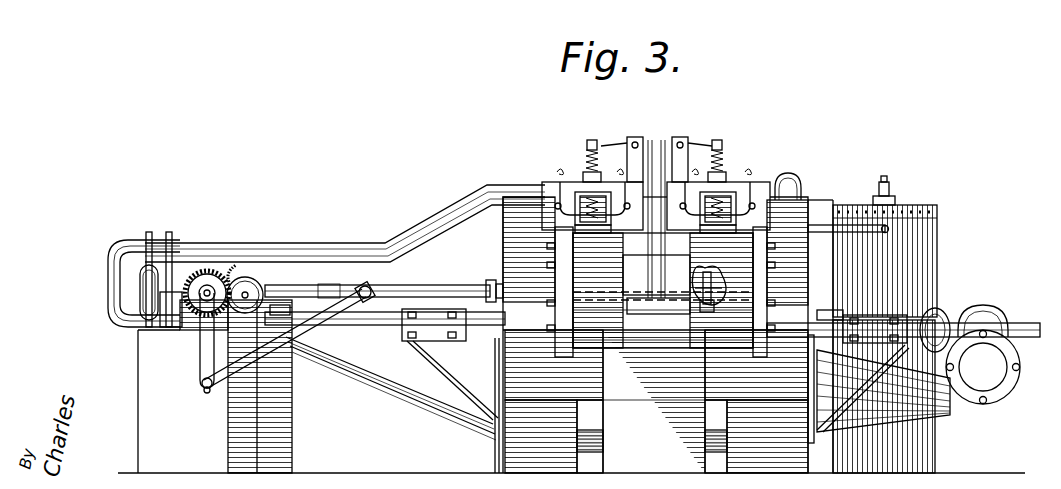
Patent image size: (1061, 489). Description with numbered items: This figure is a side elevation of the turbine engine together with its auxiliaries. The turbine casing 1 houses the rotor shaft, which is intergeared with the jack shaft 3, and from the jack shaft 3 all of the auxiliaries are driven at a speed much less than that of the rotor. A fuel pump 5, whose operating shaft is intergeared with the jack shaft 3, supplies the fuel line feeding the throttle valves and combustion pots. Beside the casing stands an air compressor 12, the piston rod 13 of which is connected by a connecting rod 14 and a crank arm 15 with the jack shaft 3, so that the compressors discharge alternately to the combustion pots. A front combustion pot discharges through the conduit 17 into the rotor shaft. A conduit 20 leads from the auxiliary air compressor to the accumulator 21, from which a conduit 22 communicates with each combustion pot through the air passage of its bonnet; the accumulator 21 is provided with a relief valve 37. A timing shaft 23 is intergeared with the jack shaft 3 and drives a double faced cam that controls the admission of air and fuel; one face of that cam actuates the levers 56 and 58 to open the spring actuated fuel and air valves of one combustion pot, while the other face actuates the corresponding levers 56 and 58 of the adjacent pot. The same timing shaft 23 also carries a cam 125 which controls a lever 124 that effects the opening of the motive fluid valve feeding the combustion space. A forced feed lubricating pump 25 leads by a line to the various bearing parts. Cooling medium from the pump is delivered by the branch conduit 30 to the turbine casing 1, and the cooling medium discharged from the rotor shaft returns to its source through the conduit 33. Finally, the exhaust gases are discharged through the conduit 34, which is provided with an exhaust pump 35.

The turbine casing 1 is at (508, 240).
The jack shaft 3 is at (208, 286).
The fuel pump 5 is at (246, 292).
The air compressor 12 is at (661, 292).
The piston rod 13 is at (420, 281).
The connecting rod 14 is at (272, 340).
The crank arm 15 is at (200, 365).
The conduit 17 is at (298, 243).
The conduit 20 is at (821, 255).
The accumulator 21 is at (932, 230).
The conduit 22 is at (888, 226).
The timing shaft 23 is at (335, 286).
The forced feed lubricating pump 25 is at (127, 328).
The branch conduit 30 is at (458, 432).
The conduit 33 is at (942, 312).
The conduit 34 is at (944, 395).
The exhaust pump 35 is at (992, 312).
The relief valve 37 is at (878, 173).
The lever 56 is at (694, 142).
The lever 58 is at (607, 142).
The lever 124 is at (735, 300).
The cam 125 is at (735, 280).